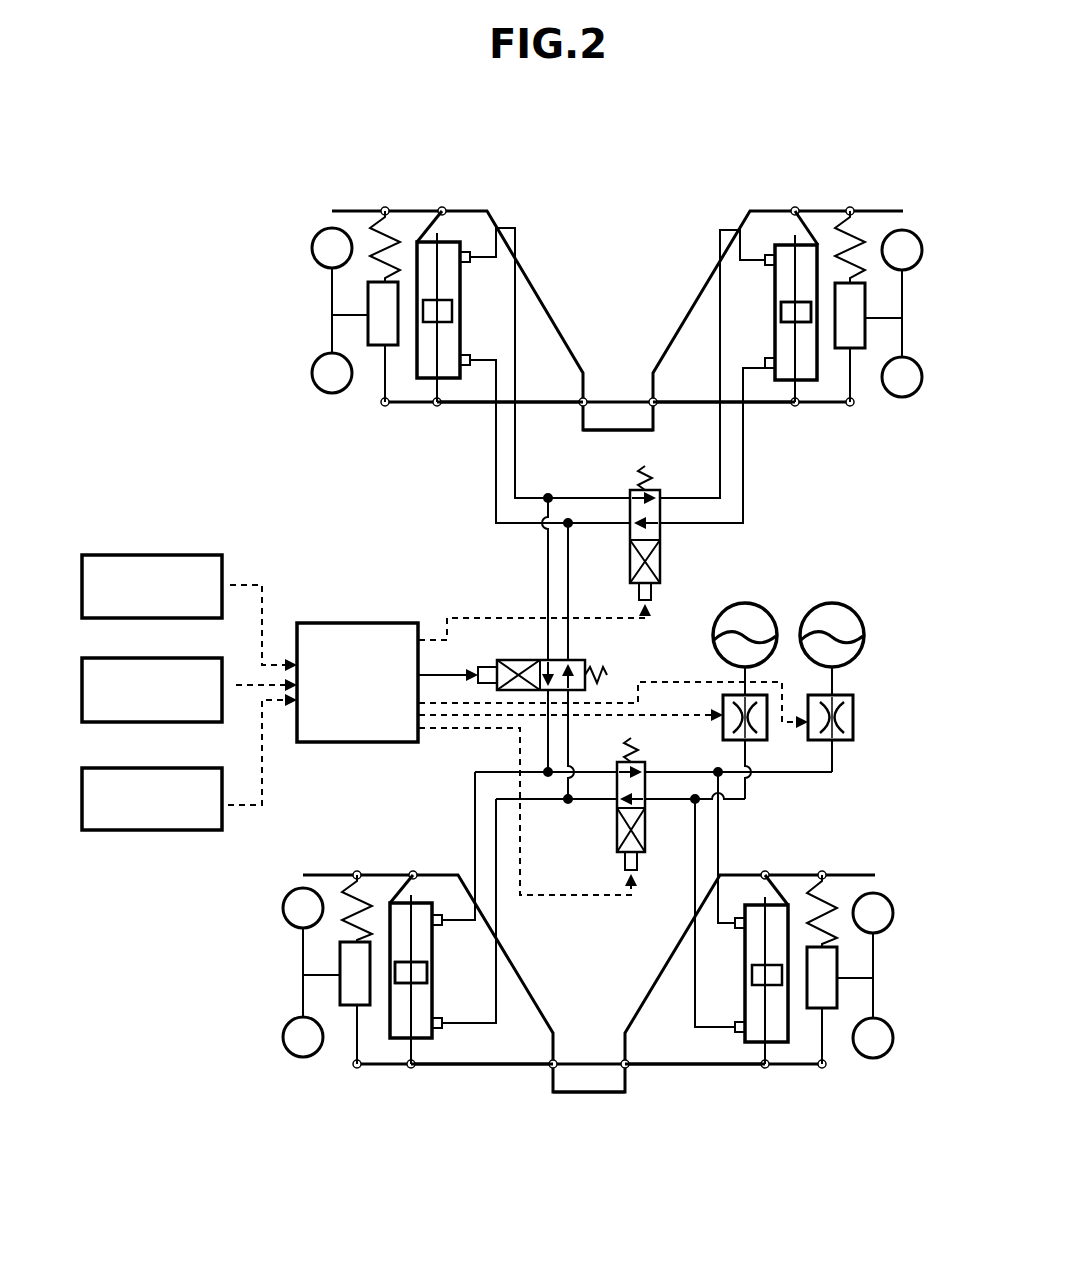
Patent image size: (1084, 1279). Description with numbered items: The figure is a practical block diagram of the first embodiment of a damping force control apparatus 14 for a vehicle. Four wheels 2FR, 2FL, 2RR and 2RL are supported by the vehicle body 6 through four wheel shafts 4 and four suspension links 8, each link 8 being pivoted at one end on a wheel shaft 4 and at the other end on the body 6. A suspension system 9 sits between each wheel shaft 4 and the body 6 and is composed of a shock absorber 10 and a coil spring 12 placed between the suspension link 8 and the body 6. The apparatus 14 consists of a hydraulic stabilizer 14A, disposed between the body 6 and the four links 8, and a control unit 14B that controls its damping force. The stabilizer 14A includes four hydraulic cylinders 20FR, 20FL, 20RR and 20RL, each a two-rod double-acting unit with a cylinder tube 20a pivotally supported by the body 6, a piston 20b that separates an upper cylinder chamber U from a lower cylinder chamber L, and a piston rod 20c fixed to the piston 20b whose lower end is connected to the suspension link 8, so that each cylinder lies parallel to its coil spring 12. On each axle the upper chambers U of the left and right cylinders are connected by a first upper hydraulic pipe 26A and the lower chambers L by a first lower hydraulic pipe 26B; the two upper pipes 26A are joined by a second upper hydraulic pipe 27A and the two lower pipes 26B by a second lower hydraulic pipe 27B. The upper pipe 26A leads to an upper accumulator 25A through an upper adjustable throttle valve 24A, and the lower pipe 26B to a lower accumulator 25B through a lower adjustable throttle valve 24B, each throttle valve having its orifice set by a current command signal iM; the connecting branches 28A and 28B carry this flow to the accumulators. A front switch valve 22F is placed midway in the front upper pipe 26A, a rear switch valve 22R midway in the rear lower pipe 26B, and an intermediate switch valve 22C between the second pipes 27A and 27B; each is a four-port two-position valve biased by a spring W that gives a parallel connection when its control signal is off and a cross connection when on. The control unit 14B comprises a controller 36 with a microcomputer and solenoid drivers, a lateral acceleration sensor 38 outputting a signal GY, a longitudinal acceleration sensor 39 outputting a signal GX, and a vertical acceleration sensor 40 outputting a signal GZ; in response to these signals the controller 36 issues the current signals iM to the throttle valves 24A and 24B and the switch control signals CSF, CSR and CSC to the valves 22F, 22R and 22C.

The suspension system 9 is at (343, 220).
The vehicle body 6 is at (622, 431).
The suspension link 8 is at (470, 406).
The front left wheel 2FL is at (312, 250).
The front right wheel 2FR is at (898, 398).
The rear left wheel 2RL is at (292, 918).
The rear right wheel 2RR is at (873, 1060).
The wheel shaft 4 is at (342, 316).
The shock absorber 10 is at (368, 330).
The coil spring 12 is at (378, 225).
The front left hydraulic cylinder 20FL is at (414, 228).
The front right hydraulic cylinder 20FR is at (822, 232).
The rear left hydraulic cylinder 20RL is at (388, 895).
The rear right hydraulic cylinder 20RR is at (806, 895).
The cylinder tube 20a is at (778, 362).
The piston 20b is at (784, 312).
The piston rod 20c is at (790, 298).
The upper cylinder chamber U is at (465, 300).
The lower cylinder chamber L is at (465, 346).
The first upper hydraulic pipe 26A is at (516, 456).
The first lower hydraulic pipe 26B is at (496, 508).
The second upper hydraulic pipe 27A is at (548, 570).
The second lower hydraulic pipe 27B is at (568, 638).
The front electromagnetic direction switch valve 22F is at (660, 548).
The rear electromagnetic direction switch valve 22R is at (617, 846).
The intermediate electromagnetic direction switch valve 22C is at (546, 658).
The front switch control signal CSF is at (532, 612).
The rear switch control signal CSR is at (525, 812).
The intermediate switch control signal CSC is at (447, 662).
The valve spring W is at (598, 685).
The upper accumulator 25A is at (830, 603).
The lower accumulator 25B is at (744, 603).
The upper adjustable throttle valve 24A is at (853, 724).
The lower adjustable throttle valve 24B is at (752, 742).
The current command signal iM is at (612, 693).
The accumulator connecting line 28A is at (834, 776).
The accumulator connecting line 28B is at (746, 802).
The controller 36 is at (340, 745).
The lateral acceleration sensor 38 is at (120, 536).
The longitudinal acceleration sensor 39 is at (118, 660).
The vertical acceleration sensor 40 is at (116, 768).
The lateral acceleration signal GY is at (259, 613).
The longitudinal acceleration signal GX is at (259, 683).
The vertical acceleration signal GZ is at (259, 753).
The damping force control apparatus 14 is at (271, 489).
The hydraulic stabilizer 14A is at (410, 463).
The control unit 14B is at (314, 570).